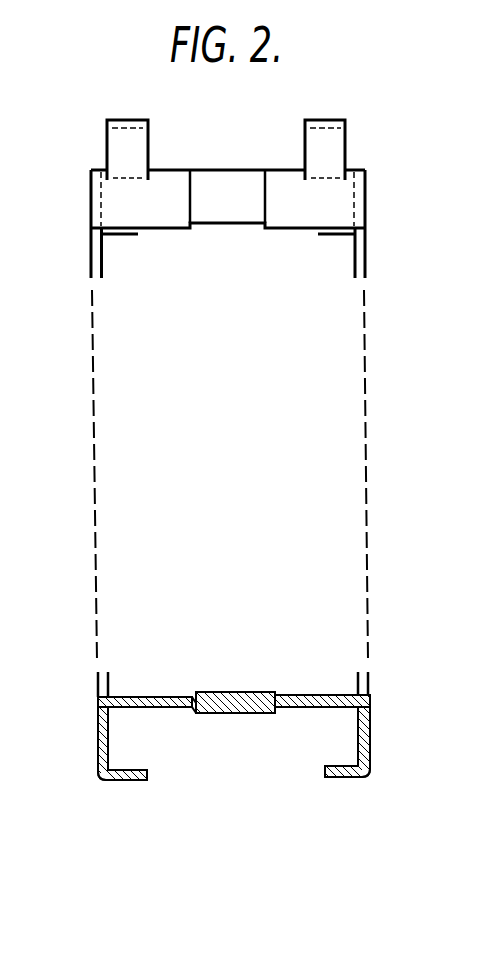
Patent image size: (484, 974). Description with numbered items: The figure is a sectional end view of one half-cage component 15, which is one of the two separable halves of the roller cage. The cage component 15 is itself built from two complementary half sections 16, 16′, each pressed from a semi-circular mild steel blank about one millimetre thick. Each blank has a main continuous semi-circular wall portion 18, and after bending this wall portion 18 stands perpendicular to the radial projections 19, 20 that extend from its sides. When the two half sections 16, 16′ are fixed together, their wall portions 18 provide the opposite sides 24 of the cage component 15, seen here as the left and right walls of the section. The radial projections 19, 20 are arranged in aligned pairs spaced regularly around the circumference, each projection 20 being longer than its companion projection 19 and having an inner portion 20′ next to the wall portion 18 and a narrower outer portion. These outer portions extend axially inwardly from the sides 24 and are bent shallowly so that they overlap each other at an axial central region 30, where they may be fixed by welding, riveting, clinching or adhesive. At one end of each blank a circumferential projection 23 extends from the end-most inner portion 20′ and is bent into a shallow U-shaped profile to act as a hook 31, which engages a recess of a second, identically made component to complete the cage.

The half-cage component 15 is at (80, 401).
The half section 16 is at (358, 723).
The half section 16′ is at (113, 740).
The main continuous semi-circular wall portion 18 is at (101, 753).
The radial projection 19 is at (137, 779).
The radial projection 20 is at (128, 697).
The inner portion of projection 20′ is at (256, 630).
The circumferential projection 23 is at (313, 147).
The side of cage component 24 is at (91, 204).
The overlap region 30 is at (263, 685).
The hook 31 is at (312, 120).